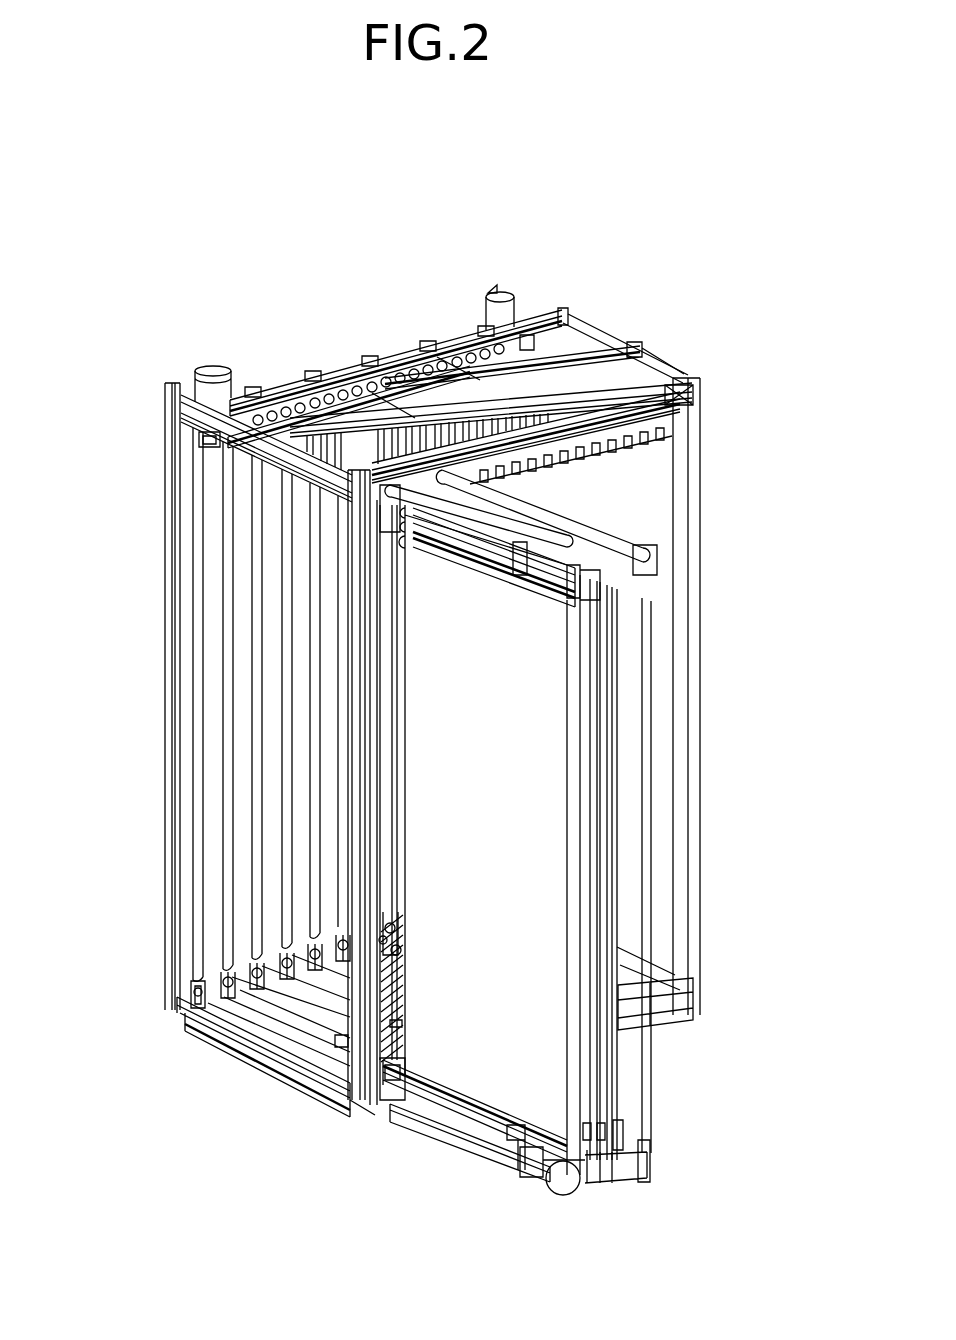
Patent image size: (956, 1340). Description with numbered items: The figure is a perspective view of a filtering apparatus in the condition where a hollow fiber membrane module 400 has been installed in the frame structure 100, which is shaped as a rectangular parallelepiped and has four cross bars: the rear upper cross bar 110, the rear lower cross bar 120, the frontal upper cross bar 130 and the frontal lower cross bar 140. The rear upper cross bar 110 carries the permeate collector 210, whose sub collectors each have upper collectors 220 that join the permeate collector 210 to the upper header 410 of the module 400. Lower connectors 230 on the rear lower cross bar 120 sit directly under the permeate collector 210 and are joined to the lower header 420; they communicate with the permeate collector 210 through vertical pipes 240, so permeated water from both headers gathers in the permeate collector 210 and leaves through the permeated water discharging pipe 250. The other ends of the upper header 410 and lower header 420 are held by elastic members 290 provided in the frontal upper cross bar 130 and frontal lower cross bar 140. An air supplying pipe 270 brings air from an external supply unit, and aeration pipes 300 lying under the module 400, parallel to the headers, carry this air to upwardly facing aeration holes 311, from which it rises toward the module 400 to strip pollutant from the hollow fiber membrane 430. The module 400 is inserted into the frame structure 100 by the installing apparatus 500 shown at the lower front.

The frame structure 100 is at (705, 579).
The rear upper cross bar 110 is at (406, 340).
The rear lower cross bar 120 is at (195, 987).
The frontal upper cross bar 130 is at (660, 406).
The frontal lower cross bar 140 is at (677, 997).
The permeate collector 210 is at (347, 362).
The upper collector 220 is at (285, 404).
The lower connector 230 is at (214, 969).
The vertical pipe 240 is at (237, 722).
The permeated water discharging pipe 250 is at (197, 374).
The air supplying pipe 270 is at (503, 298).
The elastic member 290 is at (642, 434).
The aeration pipe 300 is at (250, 1001).
The aeration hole 311 is at (290, 1018).
The hollow fiber membrane module 400 is at (537, 933).
The upper header 410 is at (540, 592).
The lower header 420 is at (537, 1130).
The hollow fiber membrane 430 is at (537, 880).
The apparatus for installing the hollow fiber membrane module 500 is at (655, 1140).